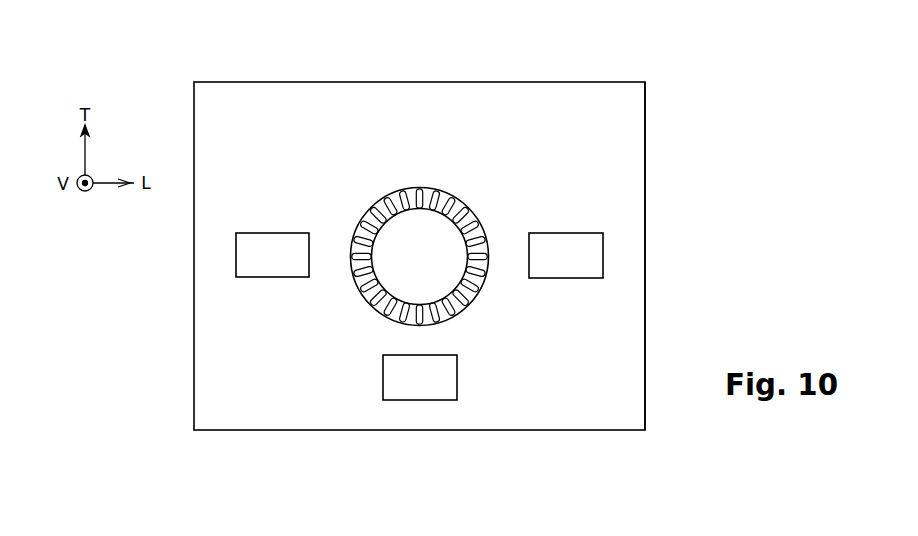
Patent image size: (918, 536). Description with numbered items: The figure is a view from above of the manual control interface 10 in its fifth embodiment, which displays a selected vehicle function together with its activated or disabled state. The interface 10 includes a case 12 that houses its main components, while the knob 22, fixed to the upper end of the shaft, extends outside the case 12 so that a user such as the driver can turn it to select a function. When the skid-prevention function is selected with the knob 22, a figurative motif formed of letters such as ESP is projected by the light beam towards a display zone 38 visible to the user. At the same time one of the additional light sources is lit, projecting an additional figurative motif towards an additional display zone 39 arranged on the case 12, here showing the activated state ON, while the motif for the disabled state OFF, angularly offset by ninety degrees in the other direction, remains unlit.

The manual control interface 10 is at (178, 97).
The case 12 is at (645, 163).
The knob 22 is at (413, 194).
The display zone 38 is at (407, 400).
The additional display zone 39 is at (272, 233).